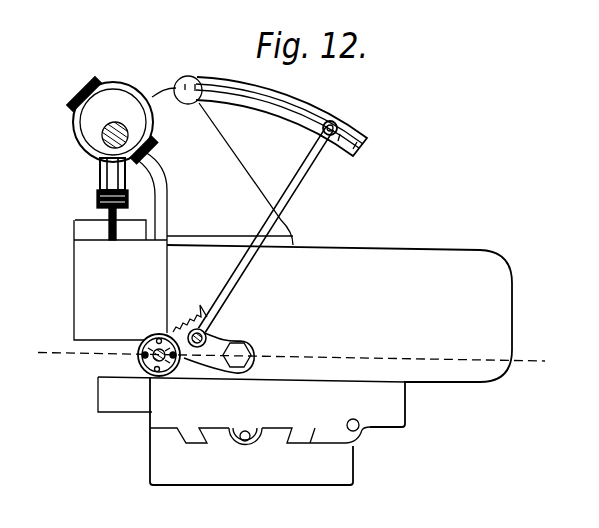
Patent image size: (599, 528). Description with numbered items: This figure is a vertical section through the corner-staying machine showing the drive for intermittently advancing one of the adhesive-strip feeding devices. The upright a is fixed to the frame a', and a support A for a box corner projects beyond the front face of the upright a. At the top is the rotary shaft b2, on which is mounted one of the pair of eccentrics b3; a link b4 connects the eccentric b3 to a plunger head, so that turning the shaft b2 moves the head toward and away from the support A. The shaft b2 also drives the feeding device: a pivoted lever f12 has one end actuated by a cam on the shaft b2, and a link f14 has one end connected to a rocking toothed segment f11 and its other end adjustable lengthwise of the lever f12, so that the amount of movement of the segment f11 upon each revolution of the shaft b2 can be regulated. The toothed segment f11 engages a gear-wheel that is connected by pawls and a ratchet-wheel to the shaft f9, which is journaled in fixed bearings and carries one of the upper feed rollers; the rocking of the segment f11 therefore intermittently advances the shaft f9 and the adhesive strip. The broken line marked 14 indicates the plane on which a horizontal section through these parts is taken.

The eccentric b3 is at (72, 117).
The rotary shaft b2 is at (107, 138).
The link b4 is at (108, 186).
The pivoted lever f12 is at (313, 110).
The link f14 is at (295, 190).
The toothed segment f11 is at (216, 333).
The shaft f9 is at (140, 362).
The upright a is at (271, 282).
The support A is at (110, 402).
The frame a' is at (251, 445).
The section line 14- 14 is at (288, 357).